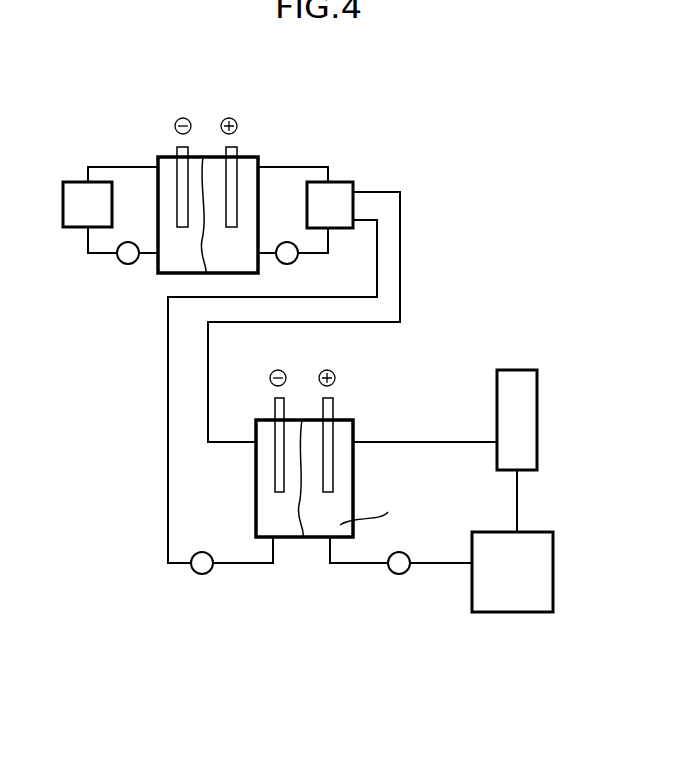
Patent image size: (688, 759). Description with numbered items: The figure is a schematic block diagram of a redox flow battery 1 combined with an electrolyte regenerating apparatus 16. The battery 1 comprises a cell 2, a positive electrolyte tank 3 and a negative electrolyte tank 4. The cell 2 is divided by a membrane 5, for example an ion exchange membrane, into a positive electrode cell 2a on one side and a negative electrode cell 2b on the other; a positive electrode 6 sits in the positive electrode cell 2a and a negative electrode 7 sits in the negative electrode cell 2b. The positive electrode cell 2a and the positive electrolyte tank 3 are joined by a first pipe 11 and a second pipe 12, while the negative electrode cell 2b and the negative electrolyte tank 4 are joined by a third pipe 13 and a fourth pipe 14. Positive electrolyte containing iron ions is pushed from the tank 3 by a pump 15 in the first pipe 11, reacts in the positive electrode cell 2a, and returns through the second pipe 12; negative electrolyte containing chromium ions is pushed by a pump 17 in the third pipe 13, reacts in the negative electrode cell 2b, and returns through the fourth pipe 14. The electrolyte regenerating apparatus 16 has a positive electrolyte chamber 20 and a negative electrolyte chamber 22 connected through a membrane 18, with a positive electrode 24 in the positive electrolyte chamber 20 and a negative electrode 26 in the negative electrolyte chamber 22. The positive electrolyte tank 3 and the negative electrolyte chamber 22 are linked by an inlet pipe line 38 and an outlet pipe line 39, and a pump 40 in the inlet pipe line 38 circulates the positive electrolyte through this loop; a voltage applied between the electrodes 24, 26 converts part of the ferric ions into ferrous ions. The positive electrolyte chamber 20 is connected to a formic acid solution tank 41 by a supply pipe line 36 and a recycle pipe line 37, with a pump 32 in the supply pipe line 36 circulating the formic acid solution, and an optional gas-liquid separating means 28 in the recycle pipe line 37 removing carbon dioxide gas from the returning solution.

The redox flow battery 1 is at (314, 149).
The cell 2 is at (203, 157).
The positive electrode cell 2a is at (252, 268).
The negative electrode cell 2b is at (171, 266).
The positive electrolyte tank 3 is at (341, 190).
The negative electrolyte tank 4 is at (86, 183).
The membrane 5 is at (207, 265).
The positive electrode 6 is at (233, 148).
The negative electrode 7 is at (177, 148).
The first pipe 11 is at (319, 258).
The second pipe 12 is at (321, 166).
The third pipe 13 is at (90, 256).
The fourth pipe 14 is at (103, 166).
The pump 15 is at (287, 241).
The electrolyte regenerating apparatus 16 is at (318, 600).
The pump 17 is at (128, 241).
The membrane 18 is at (306, 520).
The positive electrolyte chamber 20 is at (354, 430).
The negative electrolyte chamber 22 is at (257, 430).
The positive electrode 24 is at (333, 404).
The negative electrode 26 is at (275, 404).
The gas-liquid separating means 28 is at (527, 394).
The pump 32 is at (400, 576).
The supply pipe line 36 is at (444, 563).
The recycle pipe line 37 is at (420, 442).
The inlet pipe line 38 is at (167, 502).
The outlet pipe line 39 is at (401, 285).
The pump 40 is at (203, 576).
The formic acid solution tank 41 is at (511, 606).